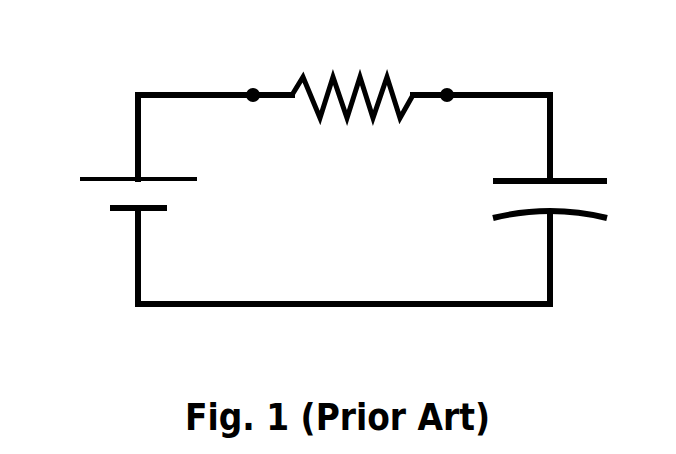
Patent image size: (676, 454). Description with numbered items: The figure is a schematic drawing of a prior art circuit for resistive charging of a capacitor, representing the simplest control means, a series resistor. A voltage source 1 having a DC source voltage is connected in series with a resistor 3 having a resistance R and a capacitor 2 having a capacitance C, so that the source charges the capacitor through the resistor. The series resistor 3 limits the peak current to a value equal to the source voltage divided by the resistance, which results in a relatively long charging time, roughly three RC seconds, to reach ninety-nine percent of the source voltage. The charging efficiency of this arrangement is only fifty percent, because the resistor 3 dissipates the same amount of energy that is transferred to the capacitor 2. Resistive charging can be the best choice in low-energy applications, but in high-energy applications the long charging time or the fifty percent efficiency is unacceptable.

The voltage source 1 is at (78, 170).
The capacitor 2 is at (607, 155).
The resistor 3 is at (358, 58).